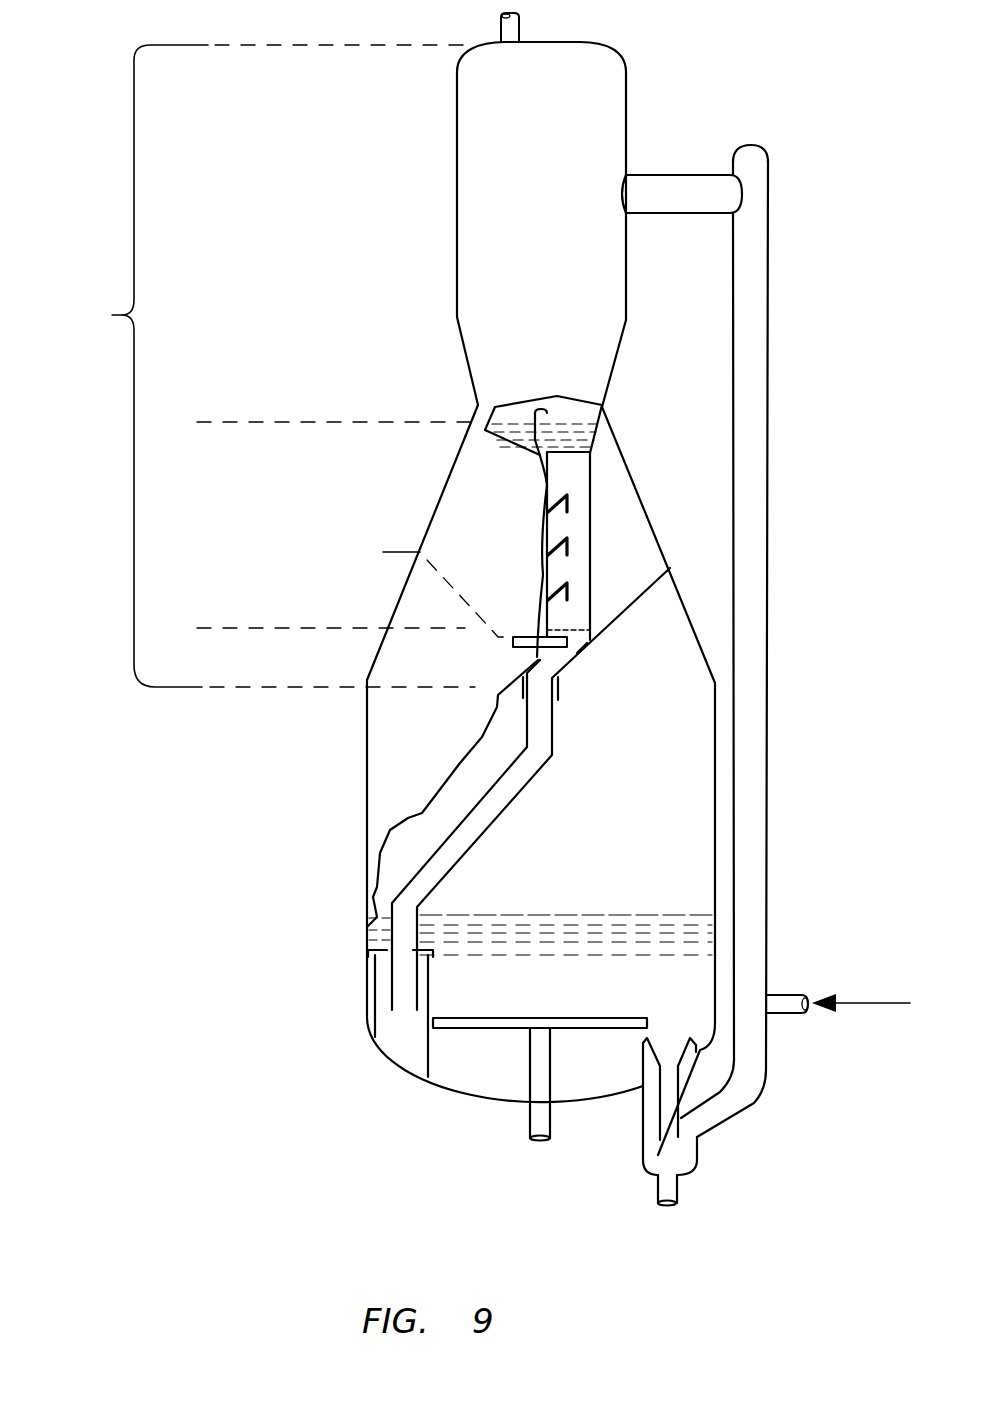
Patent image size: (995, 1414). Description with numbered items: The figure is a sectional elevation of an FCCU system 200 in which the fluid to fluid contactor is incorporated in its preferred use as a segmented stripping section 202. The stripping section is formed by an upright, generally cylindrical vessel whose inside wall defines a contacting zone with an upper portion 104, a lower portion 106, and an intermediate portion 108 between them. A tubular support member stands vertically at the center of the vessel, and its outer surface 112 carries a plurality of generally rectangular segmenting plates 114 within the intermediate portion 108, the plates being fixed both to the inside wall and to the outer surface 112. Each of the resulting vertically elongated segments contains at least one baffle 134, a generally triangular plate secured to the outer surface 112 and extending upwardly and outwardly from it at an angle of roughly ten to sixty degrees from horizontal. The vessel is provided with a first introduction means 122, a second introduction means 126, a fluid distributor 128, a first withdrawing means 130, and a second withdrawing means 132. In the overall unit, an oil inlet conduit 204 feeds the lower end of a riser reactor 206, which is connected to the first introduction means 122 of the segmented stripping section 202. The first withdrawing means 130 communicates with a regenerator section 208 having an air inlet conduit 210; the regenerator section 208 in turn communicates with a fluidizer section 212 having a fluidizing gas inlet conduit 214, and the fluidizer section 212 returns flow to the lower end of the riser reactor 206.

The FCCU system 200 is at (388, 50).
The segmented stripping section 202 is at (98, 331).
The upper portion 104 is at (295, 252).
The intermediate portion 108 is at (296, 543).
The lower portion 106 is at (296, 673).
The second withdrawing means 132 is at (501, 36).
The first introduction means 122 is at (700, 175).
The riser reactor 206 is at (768, 240).
The outer surface 112 is at (547, 460).
The segmenting plates 114 is at (590, 573).
The baffle 134 is at (590, 531).
The second introduction means 126 is at (383, 552).
The fluid distributor 128 is at (563, 648).
The first withdrawing means 130 is at (528, 783).
The regenerator section 208 is at (406, 744).
The air inlet conduit 210 is at (528, 1087).
The fluidizer section 212 is at (714, 1175).
The fluidizing gas inlet conduit 214 is at (656, 1183).
The oil inlet conduit 204 is at (801, 1017).